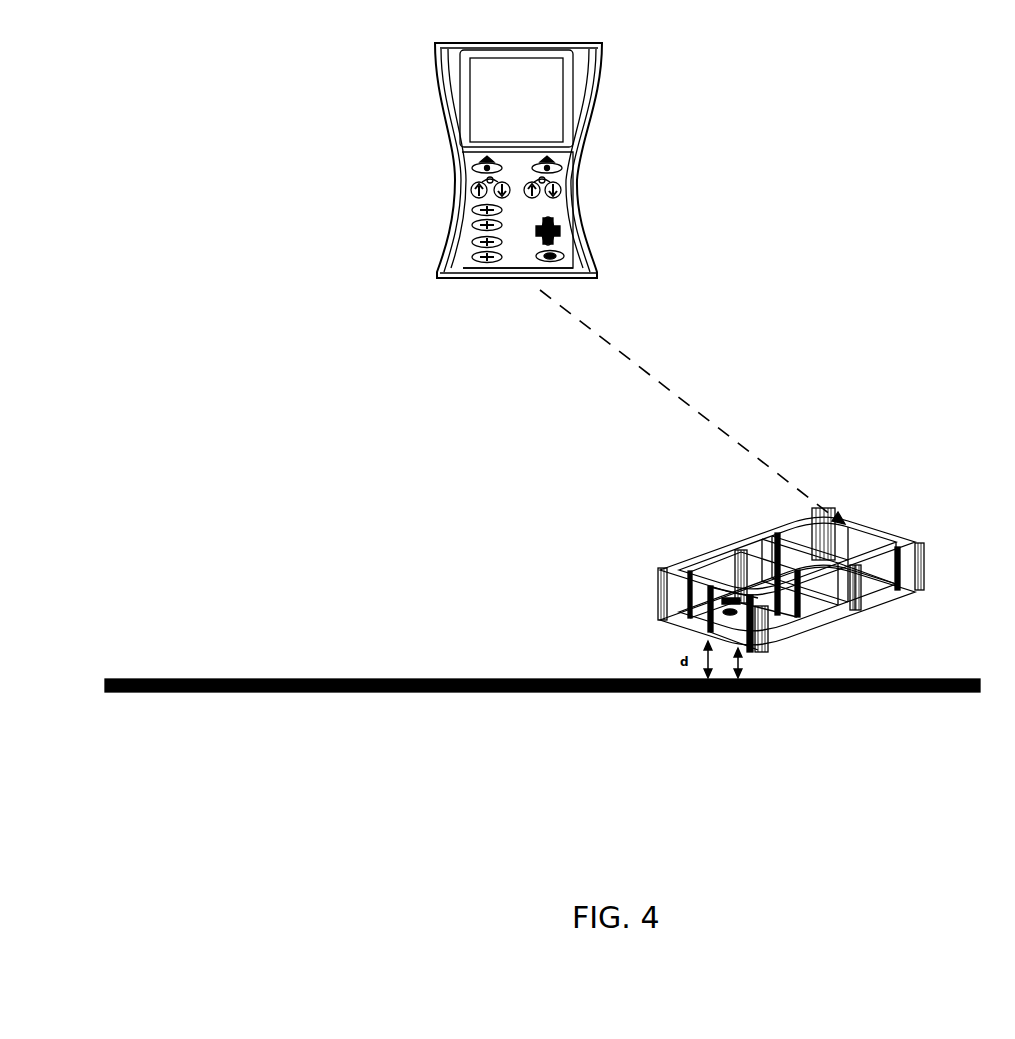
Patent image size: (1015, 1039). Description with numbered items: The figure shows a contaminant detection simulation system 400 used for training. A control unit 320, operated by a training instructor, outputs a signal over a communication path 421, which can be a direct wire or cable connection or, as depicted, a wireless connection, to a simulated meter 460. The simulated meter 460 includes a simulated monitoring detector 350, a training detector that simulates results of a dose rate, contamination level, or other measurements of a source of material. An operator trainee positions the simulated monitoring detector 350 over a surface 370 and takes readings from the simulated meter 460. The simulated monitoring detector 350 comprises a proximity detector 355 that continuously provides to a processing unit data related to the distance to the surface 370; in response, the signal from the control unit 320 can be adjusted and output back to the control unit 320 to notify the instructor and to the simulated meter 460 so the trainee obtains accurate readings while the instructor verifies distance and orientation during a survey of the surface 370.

The control unit 320 is at (600, 93).
The simulated monitoring detector 350 is at (730, 545).
The proximity detector 355 is at (719, 603).
The surface 370 is at (602, 694).
The contaminant detection simulation system 400 is at (812, 172).
The communication path 421 is at (627, 393).
The simulated meter 460 is at (905, 521).